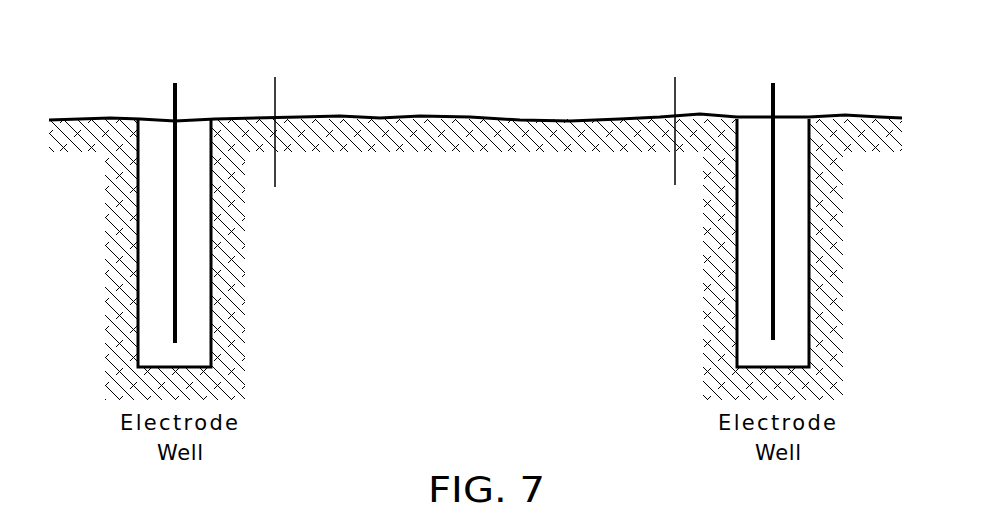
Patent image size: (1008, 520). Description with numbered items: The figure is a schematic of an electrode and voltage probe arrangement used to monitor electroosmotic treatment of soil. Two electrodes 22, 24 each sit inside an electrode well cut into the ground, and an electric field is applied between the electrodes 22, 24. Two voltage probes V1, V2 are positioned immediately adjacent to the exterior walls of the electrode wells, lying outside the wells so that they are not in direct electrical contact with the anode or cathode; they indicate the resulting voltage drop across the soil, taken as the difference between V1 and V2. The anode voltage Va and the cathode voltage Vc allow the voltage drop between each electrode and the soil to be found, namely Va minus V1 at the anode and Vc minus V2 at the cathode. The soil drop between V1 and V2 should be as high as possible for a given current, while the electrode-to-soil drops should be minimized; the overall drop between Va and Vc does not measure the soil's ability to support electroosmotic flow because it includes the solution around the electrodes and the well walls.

The electrode 22 is at (175, 285).
The electrode 24 is at (773, 282).
The voltage probe V1 is at (275, 116).
The voltage probe V2 is at (675, 115).
The anode voltage Va is at (175, 57).
The cathode voltage Vc is at (773, 57).